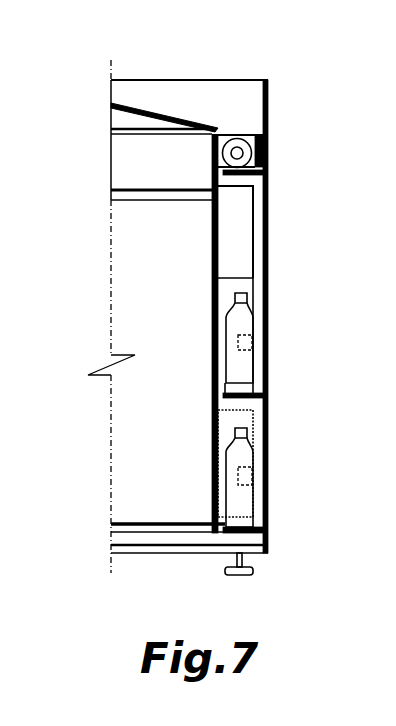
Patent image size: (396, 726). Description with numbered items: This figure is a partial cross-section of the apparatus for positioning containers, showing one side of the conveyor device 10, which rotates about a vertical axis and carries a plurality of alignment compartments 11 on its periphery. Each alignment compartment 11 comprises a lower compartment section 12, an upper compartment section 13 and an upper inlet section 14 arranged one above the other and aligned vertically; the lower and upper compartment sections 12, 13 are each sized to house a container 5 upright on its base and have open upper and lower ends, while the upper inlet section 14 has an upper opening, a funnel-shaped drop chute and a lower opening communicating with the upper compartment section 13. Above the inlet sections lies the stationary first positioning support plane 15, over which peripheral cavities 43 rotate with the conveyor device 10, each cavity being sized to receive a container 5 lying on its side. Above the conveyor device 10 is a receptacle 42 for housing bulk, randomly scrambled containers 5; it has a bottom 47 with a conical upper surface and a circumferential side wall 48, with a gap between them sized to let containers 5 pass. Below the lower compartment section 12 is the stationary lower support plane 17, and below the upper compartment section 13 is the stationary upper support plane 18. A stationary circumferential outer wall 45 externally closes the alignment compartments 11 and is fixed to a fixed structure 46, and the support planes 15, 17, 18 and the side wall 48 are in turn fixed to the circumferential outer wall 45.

The conveyor device 10 is at (134, 207).
The receptacle 42 is at (179, 76).
The bottom 47 is at (158, 114).
The peripheral cavity 43 is at (253, 135).
The circumferential side wall 48 is at (268, 93).
The container 5 is at (258, 143).
The first positioning support plane 15 is at (262, 184).
The upper inlet section 14 is at (245, 221).
The circumferential outer wall 45 is at (268, 243).
The upper compartment section 13 is at (245, 287).
The alignment compartment 11 is at (271, 366).
The stationary upper support plane 18 is at (253, 400).
The lower compartment section 12 is at (243, 420).
The fixed structure 46 is at (173, 553).
The stationary lower support plane 17 is at (247, 553).